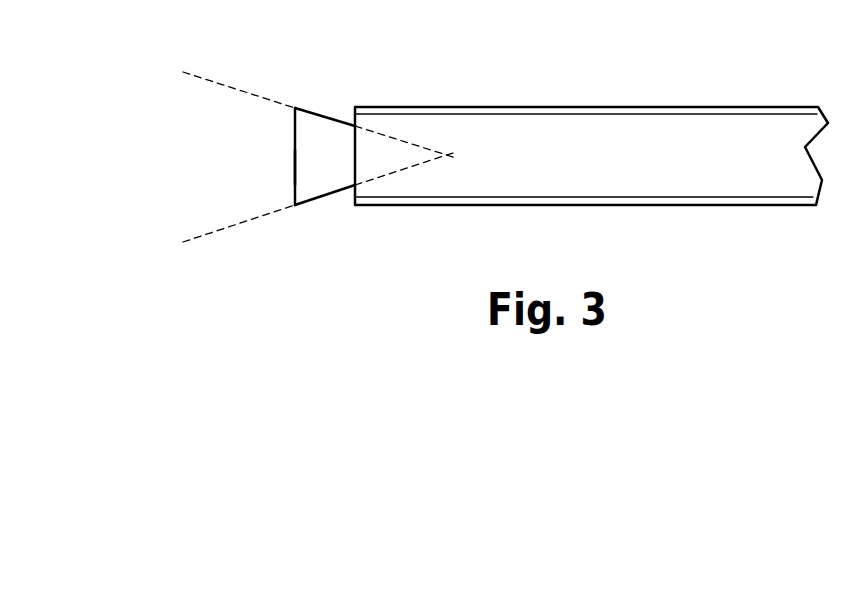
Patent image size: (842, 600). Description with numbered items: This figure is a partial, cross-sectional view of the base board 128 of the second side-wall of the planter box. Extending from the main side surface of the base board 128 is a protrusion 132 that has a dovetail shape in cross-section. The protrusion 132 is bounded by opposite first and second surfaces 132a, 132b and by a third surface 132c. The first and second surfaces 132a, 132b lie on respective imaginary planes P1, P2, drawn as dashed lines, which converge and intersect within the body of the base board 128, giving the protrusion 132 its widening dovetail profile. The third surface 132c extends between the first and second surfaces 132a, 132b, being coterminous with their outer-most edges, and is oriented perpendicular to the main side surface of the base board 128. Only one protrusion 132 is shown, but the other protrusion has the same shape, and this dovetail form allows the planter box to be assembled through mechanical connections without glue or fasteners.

The base board 128 is at (633, 167).
The protrusion 132 is at (322, 147).
The first surface 132a is at (327, 115).
The second surface 132b is at (330, 194).
The third surface 132c is at (295, 168).
The imaginary plane P1 is at (314, 101).
The imaginary plane P2 is at (314, 215).